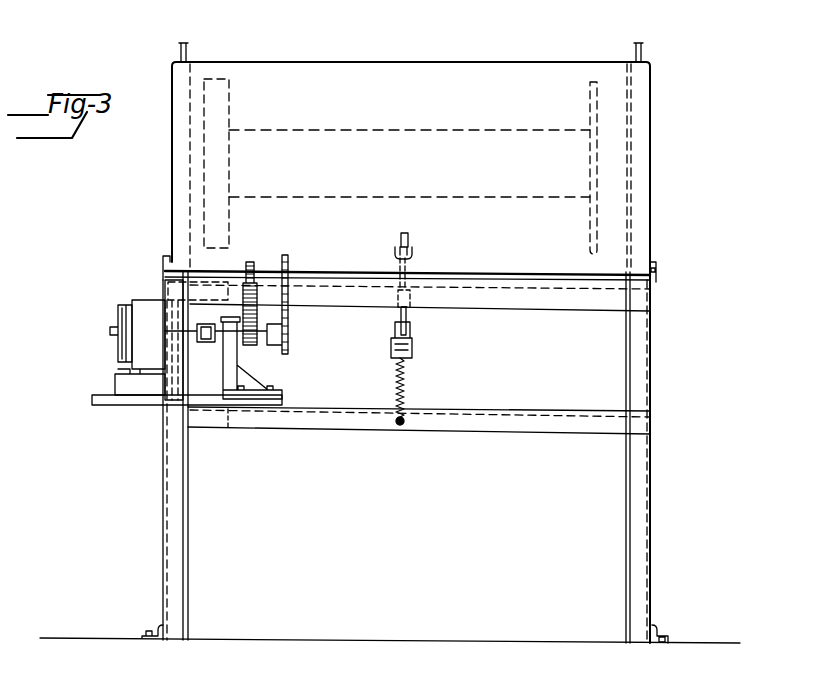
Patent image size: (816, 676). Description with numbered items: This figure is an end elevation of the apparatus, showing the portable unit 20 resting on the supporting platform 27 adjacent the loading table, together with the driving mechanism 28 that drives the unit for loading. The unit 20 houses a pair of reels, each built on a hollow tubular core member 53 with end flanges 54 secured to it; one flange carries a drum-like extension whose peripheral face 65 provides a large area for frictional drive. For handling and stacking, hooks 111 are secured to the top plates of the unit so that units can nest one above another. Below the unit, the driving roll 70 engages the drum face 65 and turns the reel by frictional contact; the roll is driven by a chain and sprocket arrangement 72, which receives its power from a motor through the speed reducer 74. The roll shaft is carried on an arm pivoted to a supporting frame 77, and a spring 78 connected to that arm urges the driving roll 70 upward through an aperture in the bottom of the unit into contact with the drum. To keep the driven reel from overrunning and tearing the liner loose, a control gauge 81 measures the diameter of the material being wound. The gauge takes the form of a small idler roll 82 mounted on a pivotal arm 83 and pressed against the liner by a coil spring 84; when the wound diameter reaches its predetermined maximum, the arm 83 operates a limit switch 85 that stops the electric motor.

The portable unit 20 is at (547, 62).
The hooks 111 is at (180, 47).
The peripheral face 65 is at (220, 79).
The tubular core member 53 is at (467, 130).
The end flanges 54 is at (604, 103).
The supporting frame 77 is at (313, 298).
The supporting platform 27 is at (660, 276).
The driving roll 70 is at (176, 292).
The driving mechanism 28 is at (114, 316).
The speed reducer 74 is at (140, 340).
The chain and sprocket arrangement 72 is at (288, 310).
The spring 78 is at (262, 348).
The idler roll 82 is at (412, 238).
The pivotal arm 83 is at (410, 268).
The control gauge 81 is at (397, 316).
The limit switch 85 is at (394, 359).
The coil spring 84 is at (408, 361).